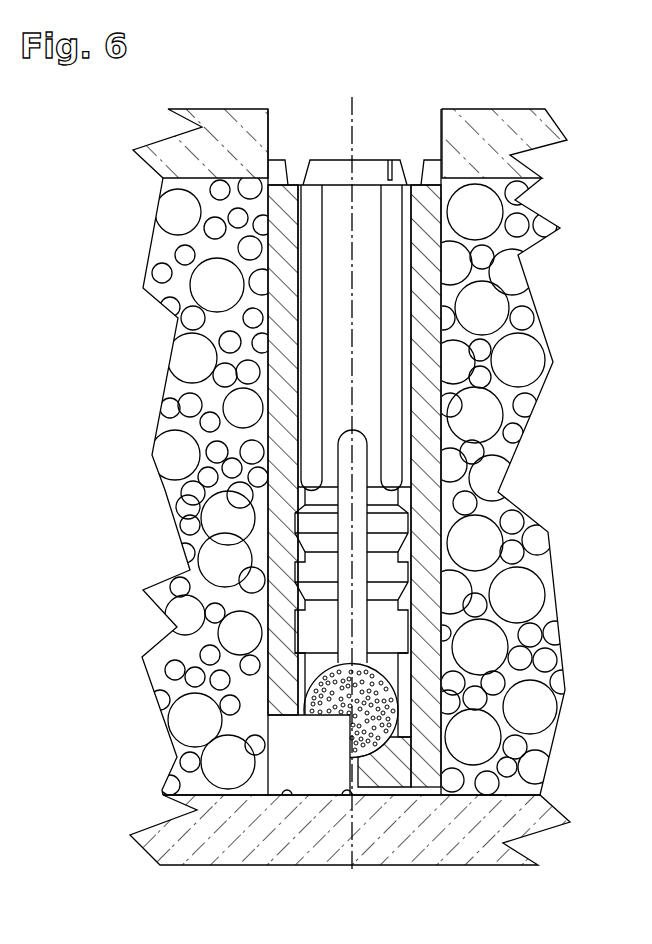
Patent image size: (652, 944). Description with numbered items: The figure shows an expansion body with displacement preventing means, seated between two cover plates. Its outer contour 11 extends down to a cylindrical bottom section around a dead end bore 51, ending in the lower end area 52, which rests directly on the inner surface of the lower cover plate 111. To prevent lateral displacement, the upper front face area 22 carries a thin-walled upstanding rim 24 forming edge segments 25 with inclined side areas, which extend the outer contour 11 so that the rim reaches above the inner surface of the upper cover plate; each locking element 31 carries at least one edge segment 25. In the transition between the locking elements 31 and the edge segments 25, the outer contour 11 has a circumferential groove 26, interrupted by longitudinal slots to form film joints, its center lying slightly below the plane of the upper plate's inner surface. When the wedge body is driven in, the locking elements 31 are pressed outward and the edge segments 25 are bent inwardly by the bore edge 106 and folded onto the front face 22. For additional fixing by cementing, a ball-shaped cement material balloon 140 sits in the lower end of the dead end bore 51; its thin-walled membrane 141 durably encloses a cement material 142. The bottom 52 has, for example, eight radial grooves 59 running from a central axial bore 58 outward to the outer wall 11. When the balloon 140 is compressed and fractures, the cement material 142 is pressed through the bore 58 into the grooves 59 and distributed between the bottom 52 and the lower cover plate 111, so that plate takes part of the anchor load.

The outer contour 11 is at (268, 275).
The front face area 22 is at (410, 186).
The upstanding rim 24 is at (336, 150).
The edge segments 25 is at (325, 168).
The circumferential groove 26 is at (270, 185).
The locking elements 31 is at (285, 320).
The dead end bore 51 is at (397, 737).
The lower end area 52 is at (277, 831).
The axial bore 58 is at (357, 772).
The radial grooves 59 is at (287, 790).
The bore edge 106 is at (398, 186).
The lower cover plate 111 is at (197, 808).
The cement material balloon 140 is at (297, 703).
The membrane 141 is at (305, 678).
The cement material 142 is at (325, 693).